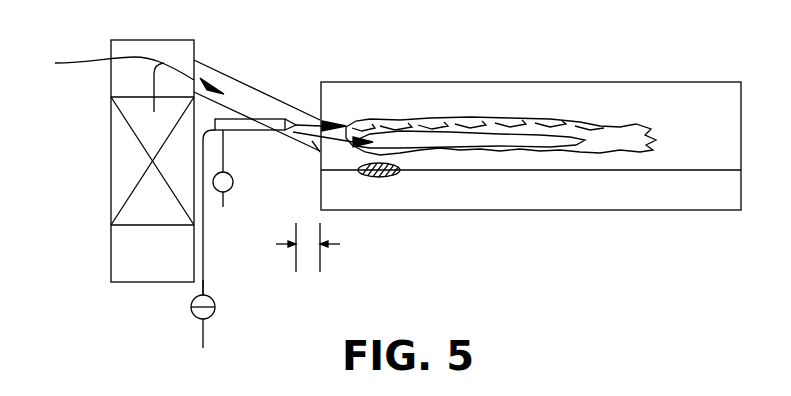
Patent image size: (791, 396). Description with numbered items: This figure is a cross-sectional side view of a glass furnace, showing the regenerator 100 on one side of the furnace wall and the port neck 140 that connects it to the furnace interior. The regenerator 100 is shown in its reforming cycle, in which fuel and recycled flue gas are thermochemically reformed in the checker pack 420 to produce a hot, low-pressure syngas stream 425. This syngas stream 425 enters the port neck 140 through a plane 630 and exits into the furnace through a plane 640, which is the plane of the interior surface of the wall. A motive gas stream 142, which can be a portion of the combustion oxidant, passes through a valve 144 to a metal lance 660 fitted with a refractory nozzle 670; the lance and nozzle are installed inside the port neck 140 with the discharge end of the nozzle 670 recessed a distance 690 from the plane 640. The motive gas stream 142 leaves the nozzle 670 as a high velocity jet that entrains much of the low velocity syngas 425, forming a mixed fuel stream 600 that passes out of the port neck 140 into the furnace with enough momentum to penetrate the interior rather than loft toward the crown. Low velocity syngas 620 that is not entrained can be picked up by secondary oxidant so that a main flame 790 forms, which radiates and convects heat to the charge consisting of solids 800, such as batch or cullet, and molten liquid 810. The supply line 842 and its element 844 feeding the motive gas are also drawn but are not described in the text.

The regenerator 100 is at (125, 283).
The checker pack 420 is at (123, 162).
The syngas stream 425 is at (108, 83).
The port neck 140 is at (246, 84).
The plane 630 is at (195, 62).
The metal lance 660 is at (252, 130).
The refractory nozzle 670 is at (291, 119).
The mixed fuel stream 600 is at (323, 122).
The low velocity syngas 620 is at (353, 143).
The plane 640 is at (318, 141).
The molten liquid 810 is at (537, 202).
The main flame 790 is at (596, 128).
The solids 800 is at (389, 202).
The distance 690 is at (309, 246).
The motive gas stream 142 is at (221, 215).
The valve 144 is at (232, 184).
The fuel supply line 842 is at (205, 284).
The fuel valve 844 is at (211, 317).